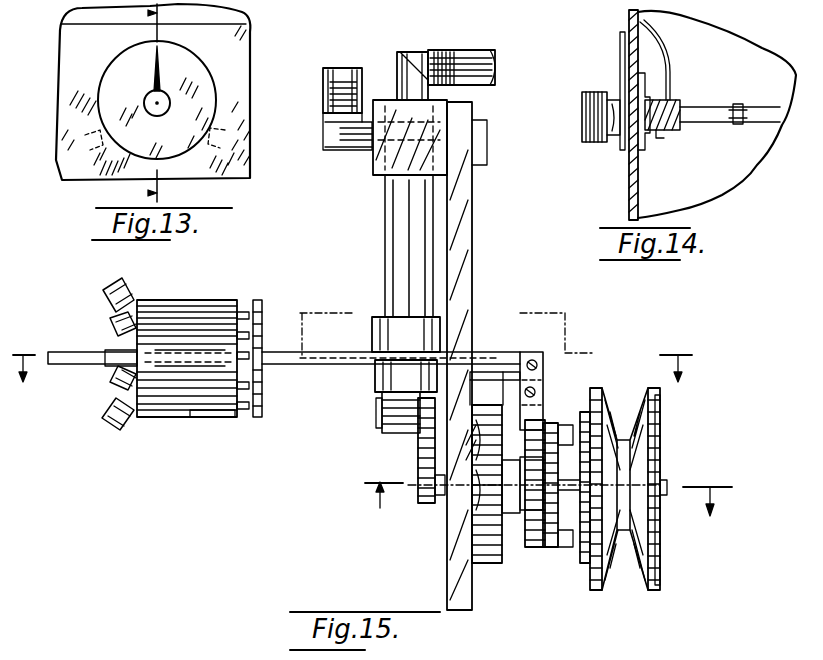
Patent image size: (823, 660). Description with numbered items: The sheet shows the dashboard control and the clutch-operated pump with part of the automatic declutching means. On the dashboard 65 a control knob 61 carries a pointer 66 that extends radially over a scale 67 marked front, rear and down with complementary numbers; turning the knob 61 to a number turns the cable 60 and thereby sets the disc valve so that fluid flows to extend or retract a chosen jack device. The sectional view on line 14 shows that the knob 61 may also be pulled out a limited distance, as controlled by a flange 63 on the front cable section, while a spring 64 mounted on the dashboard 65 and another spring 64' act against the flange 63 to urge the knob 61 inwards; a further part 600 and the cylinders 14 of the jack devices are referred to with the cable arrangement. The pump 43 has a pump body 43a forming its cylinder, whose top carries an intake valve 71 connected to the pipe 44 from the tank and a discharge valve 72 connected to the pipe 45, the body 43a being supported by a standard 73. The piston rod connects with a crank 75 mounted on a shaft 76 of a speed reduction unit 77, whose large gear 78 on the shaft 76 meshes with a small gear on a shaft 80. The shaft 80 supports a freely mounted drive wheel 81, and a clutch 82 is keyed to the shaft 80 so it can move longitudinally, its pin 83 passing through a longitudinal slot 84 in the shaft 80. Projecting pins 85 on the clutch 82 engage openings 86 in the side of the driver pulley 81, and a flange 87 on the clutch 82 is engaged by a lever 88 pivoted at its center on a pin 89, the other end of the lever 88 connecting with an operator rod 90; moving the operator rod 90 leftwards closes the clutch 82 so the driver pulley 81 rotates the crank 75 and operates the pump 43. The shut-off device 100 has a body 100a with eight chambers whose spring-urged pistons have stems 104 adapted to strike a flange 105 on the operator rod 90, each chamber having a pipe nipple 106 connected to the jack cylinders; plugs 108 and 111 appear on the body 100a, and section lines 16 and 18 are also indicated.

In FIG. 13, the cylinder 14 is at (168, 102).
In FIG. 15, the section line 16- 16 is at (351, 355).
In FIG. 15, the section line 18- 18 is at (547, 499).
In FIG. 15, the pump 43 is at (385, 252).
In FIG. 15, the pump body 43a is at (388, 192).
In FIG. 15, the pipe 44 is at (330, 70).
In FIG. 15, the pipe 45 is at (476, 56).
In FIG. 14, the cable 60 is at (694, 108).
In FIG. 14, the collar 600 is at (742, 108).
In FIG. 13, the control knob 61 is at (144, 100).
In FIG. 14, the control knob 61 is at (582, 104).
In FIG. 14, the flange 63 is at (678, 128).
In FIG. 14, the spring 64 is at (671, 85).
In FIG. 14, the spring 64' is at (672, 151).
In FIG. 13, the dashboard 65 is at (80, 178).
In FIG. 14, the dashboard 65 is at (630, 180).
In FIG. 13, the pointer 66 is at (150, 62).
In FIG. 14, the pointer 66 is at (622, 58).
In FIG. 13, the scale 67 is at (200, 97).
In FIG. 15, the intake valve 71 is at (345, 148).
In FIG. 15, the discharge valve 72 is at (415, 52).
In FIG. 15, the standard 73 is at (476, 218).
In FIG. 15, the crank 75 is at (418, 460).
In FIG. 15, the shaft 76 is at (446, 522).
In FIG. 15, the speed reduction unit 77 is at (478, 552).
In FIG. 15, the large gear 78 is at (445, 550).
In FIG. 15, the shaft 80 is at (664, 480).
In FIG. 15, the drive wheel 81 is at (660, 420).
In FIG. 15, the clutch 82 is at (548, 545).
In FIG. 15, the pin 83 is at (530, 530).
In FIG. 15, the slot 84 is at (572, 548).
In FIG. 15, the projecting pins 85 is at (582, 412).
In FIG. 15, the openings 86 is at (616, 404).
In FIG. 15, the flange 87 is at (530, 510).
In FIG. 15, the lever 88 is at (536, 420).
In FIG. 15, the pin 89 is at (540, 382).
In FIG. 15, the operator rod 90 is at (58, 352).
In FIG. 15, the shut-off device 100 is at (185, 418).
In FIG. 15, the body 100a is at (222, 417).
In FIG. 15, the stem 104 is at (244, 310).
In FIG. 15, the flange 105 is at (260, 300).
In FIG. 15, the pipe nipple 106 is at (134, 312).
In FIG. 15, the plug 108 is at (104, 292).
In FIG. 15, the plug 111 is at (104, 420).